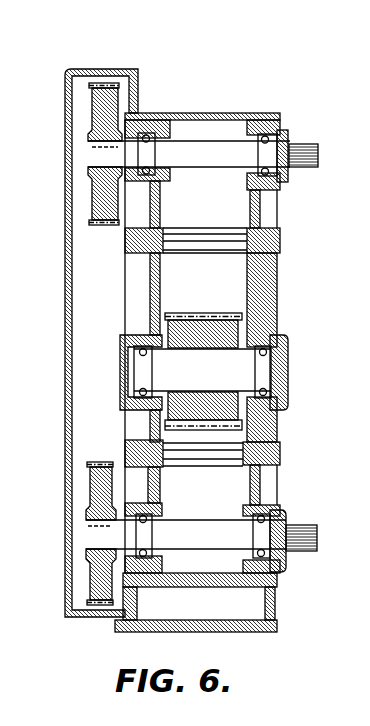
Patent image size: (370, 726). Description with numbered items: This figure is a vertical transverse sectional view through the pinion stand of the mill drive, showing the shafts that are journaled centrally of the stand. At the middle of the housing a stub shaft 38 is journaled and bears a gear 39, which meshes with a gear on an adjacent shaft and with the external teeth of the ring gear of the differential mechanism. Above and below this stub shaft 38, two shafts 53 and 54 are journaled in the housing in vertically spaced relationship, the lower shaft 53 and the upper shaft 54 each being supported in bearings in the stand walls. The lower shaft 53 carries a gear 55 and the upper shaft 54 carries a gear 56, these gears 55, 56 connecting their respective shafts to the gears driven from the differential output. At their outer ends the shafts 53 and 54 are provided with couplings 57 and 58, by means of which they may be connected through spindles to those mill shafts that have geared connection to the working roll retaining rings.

The stub shaft 38 is at (202, 370).
The gear 39 is at (216, 290).
The shaft 53 is at (216, 500).
The shaft 54 is at (192, 169).
The gear 55 is at (98, 462).
The gear 56 is at (92, 200).
The coupling 57 is at (295, 526).
The coupling 58 is at (302, 170).